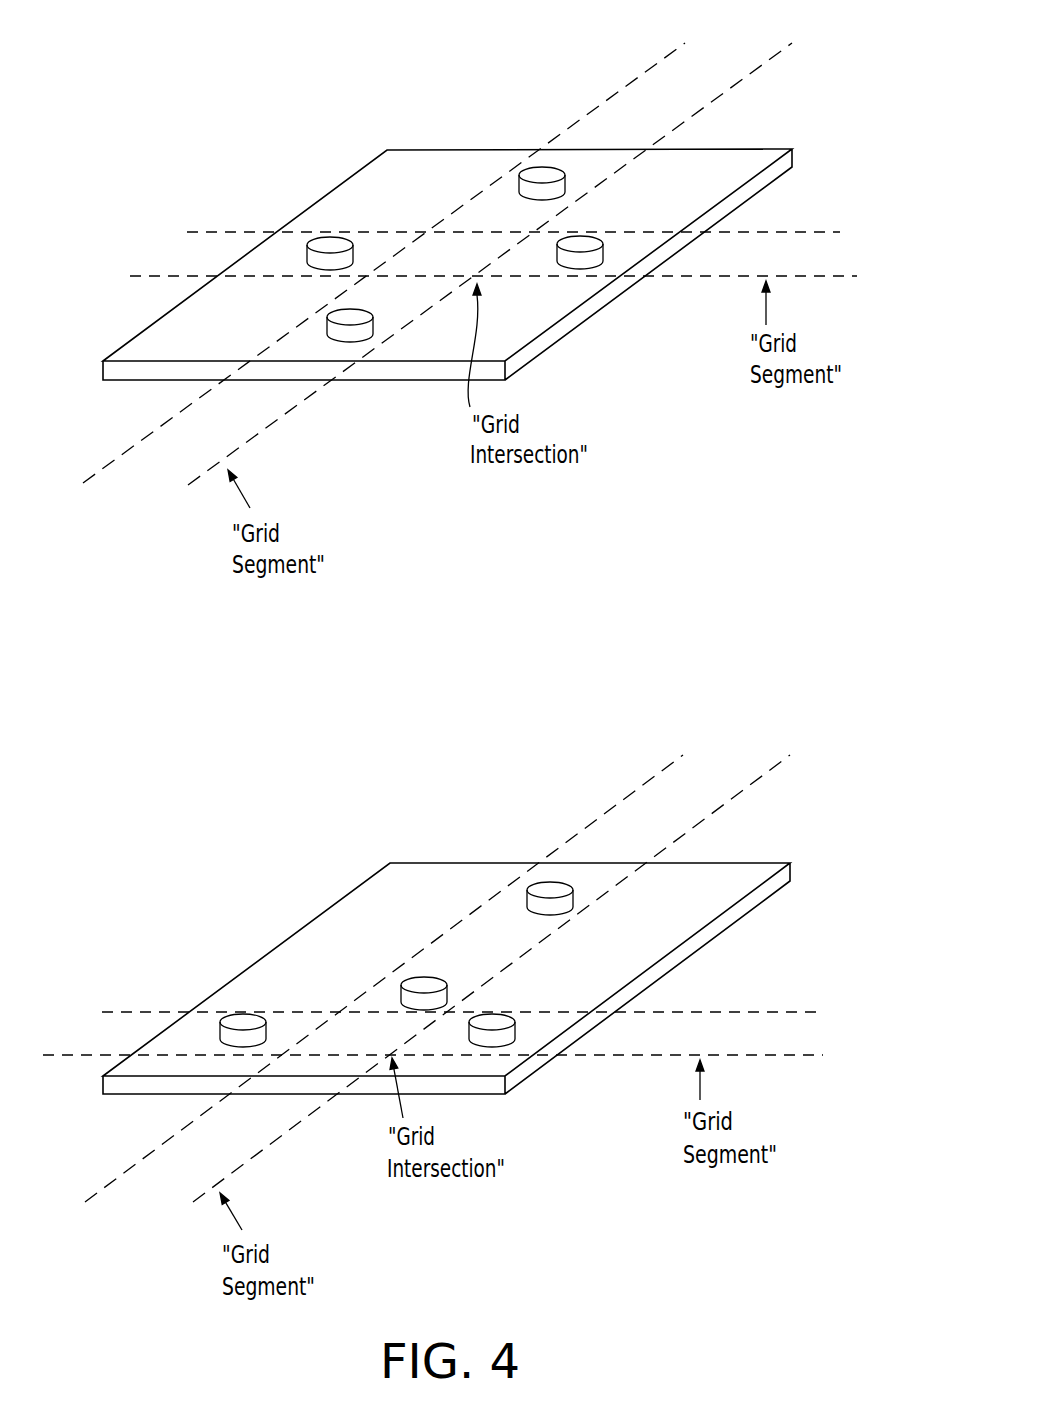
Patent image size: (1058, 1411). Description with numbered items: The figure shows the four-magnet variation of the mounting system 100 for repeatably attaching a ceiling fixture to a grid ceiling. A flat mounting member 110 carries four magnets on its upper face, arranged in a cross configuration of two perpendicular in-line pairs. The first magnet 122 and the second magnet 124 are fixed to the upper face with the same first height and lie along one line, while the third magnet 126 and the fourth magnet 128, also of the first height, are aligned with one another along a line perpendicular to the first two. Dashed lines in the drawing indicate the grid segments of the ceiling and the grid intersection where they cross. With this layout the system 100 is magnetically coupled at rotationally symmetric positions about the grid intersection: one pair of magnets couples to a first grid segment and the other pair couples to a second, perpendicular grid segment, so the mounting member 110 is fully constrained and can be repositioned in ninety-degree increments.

The mounting system 100 is at (110, 84).
The mounting member 110 is at (765, 140).
The first magnet 122 is at (330, 237).
The second magnet 124 is at (365, 308).
The third magnet 126 is at (533, 252).
The fourth magnet 128 is at (540, 167).